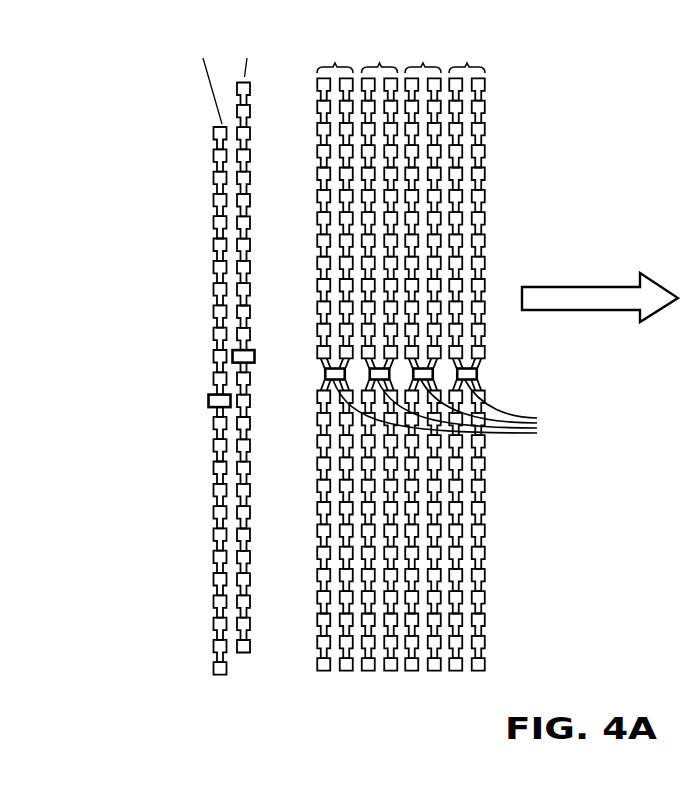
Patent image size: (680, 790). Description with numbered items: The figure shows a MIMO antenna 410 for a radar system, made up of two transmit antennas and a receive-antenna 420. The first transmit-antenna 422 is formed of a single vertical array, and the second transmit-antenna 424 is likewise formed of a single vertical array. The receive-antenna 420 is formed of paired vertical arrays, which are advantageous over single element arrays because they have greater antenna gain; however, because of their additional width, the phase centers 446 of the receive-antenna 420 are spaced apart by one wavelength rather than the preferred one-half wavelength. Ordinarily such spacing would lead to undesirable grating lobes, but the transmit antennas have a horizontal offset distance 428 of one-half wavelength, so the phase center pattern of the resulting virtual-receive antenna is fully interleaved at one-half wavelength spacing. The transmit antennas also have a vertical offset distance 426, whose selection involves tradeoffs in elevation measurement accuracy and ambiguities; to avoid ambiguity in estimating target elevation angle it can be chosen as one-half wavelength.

The MIMO antenna 410 is at (166, 81).
The receive-antenna 420 is at (485, 722).
The first transmit-antenna 422 is at (217, 560).
The second transmit-antenna 424 is at (240, 493).
The vertical offset distance 426 is at (172, 340).
The horizontal offset distance 428 is at (172, 395).
The phase centers 446 is at (453, 408).